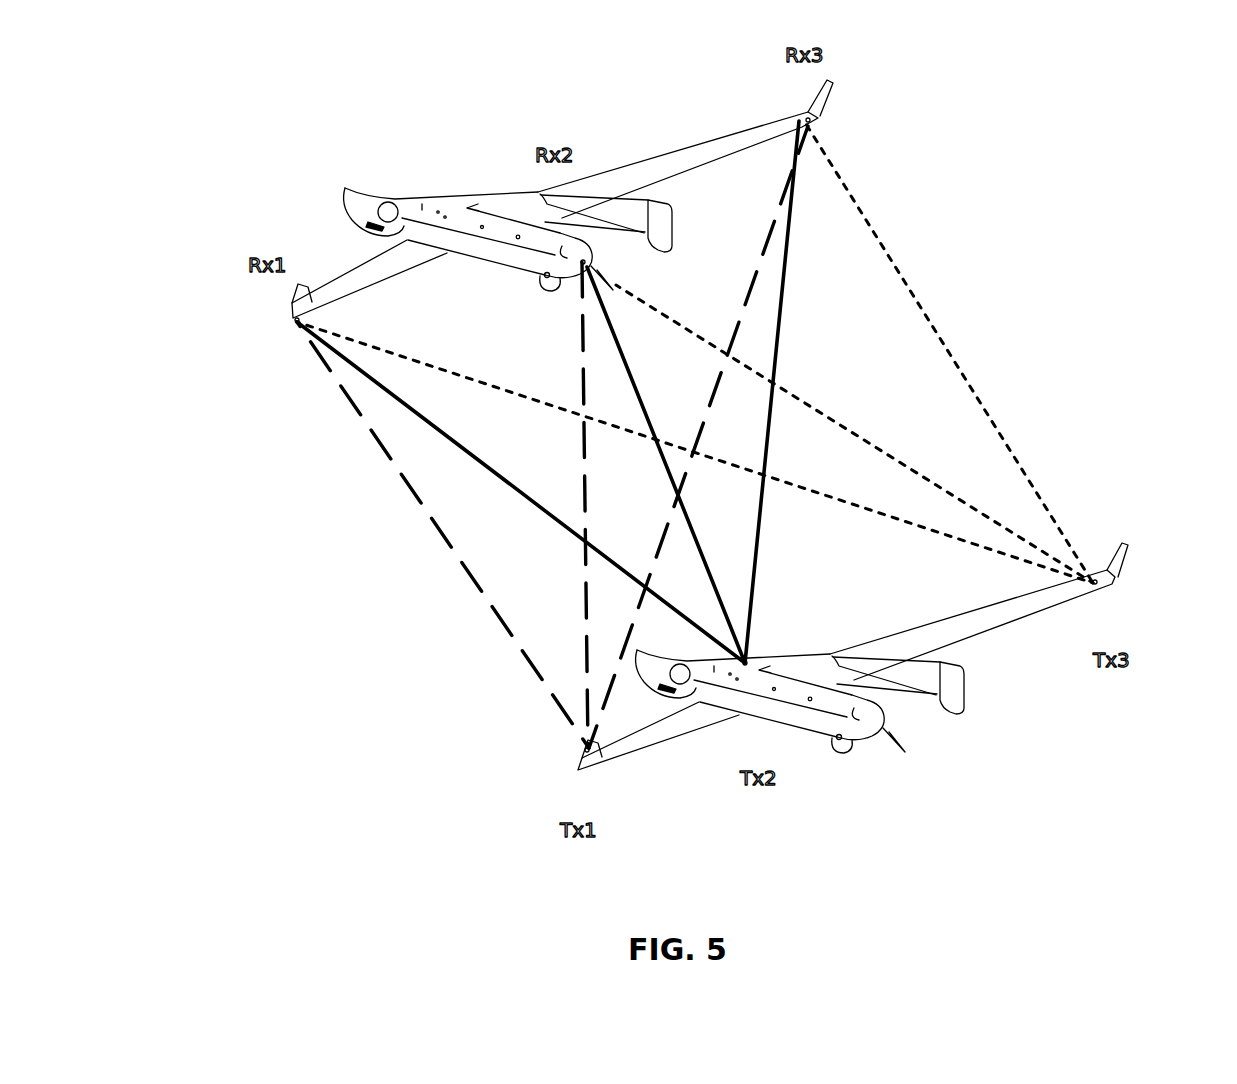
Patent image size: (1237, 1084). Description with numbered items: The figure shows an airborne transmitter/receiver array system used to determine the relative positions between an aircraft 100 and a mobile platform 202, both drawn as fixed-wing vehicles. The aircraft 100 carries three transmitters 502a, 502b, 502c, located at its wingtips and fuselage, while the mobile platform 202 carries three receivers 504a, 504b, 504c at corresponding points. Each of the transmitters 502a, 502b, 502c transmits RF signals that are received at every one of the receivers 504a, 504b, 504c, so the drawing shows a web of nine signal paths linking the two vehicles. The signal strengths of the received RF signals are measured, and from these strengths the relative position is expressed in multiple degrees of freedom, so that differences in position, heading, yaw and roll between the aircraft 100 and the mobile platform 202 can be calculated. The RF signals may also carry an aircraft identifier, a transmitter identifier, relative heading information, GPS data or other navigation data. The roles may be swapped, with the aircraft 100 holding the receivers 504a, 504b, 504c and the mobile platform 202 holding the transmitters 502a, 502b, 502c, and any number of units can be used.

The mobile platform 202 is at (349, 81).
The aircraft 100 is at (917, 809).
The transmitter 502a is at (577, 770).
The transmitter 502b is at (747, 660).
The transmitter 502c is at (1113, 590).
The receiver 504a is at (288, 308).
The receiver 504b is at (580, 260).
The receiver 504c is at (797, 112).